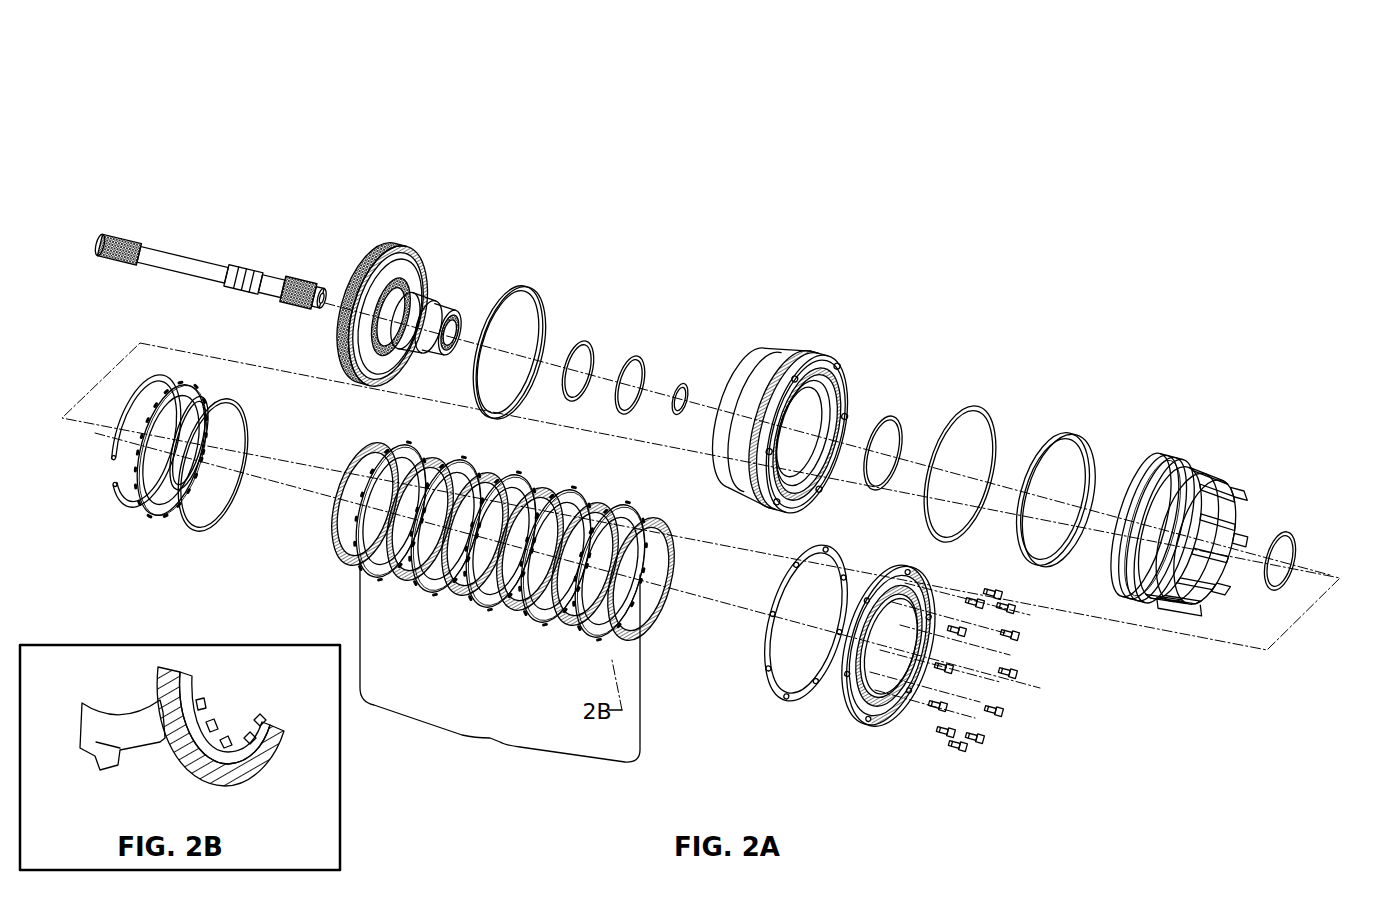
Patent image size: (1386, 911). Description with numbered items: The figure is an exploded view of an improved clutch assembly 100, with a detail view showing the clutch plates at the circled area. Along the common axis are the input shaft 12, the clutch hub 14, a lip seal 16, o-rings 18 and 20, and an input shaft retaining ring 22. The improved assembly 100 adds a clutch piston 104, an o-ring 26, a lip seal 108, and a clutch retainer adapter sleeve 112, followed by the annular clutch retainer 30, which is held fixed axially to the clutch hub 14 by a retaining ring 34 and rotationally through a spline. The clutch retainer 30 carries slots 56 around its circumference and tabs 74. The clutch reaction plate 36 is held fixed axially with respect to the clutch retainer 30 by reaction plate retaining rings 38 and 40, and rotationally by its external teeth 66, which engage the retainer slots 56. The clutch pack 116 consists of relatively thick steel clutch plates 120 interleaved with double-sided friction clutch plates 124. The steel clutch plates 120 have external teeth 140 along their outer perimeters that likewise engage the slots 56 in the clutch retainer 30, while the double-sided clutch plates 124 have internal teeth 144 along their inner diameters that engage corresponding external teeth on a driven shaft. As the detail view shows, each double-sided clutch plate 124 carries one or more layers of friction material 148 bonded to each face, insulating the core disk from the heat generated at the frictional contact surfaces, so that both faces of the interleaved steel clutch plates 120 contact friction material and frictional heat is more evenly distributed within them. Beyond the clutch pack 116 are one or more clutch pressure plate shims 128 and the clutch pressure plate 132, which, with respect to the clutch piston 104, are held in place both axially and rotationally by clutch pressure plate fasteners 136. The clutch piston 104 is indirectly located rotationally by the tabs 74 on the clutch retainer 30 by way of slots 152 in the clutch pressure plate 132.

In FIG. 2A, the input shaft 12 is at (190, 246).
In FIG. 2A, the clutch hub 14 is at (413, 242).
In FIG. 2A, the lip seal 16 is at (535, 285).
In FIG. 2A, the o-ring 18 is at (593, 335).
In FIG. 2A, the o-ring 20 is at (648, 352).
In FIG. 2A, the input shaft retaining ring 22 is at (689, 390).
In FIG. 2A, the improved clutch assembly 100 is at (822, 205).
In FIG. 2A, the clutch piston 104 is at (823, 348).
In FIG. 2A, the o-ring 26 is at (906, 410).
In FIG. 2A, the lip seal 108 is at (981, 395).
In FIG. 2A, the clutch retainer adapter sleeve 112 is at (1081, 430).
In FIG. 2A, the clutch retainer 30 is at (1217, 541).
In FIG. 2A, the slots 56 is at (1234, 495).
In FIG. 2A, the retaining ring 34 is at (1298, 520).
In FIG. 2A, the tabs 74 is at (1208, 600).
In FIG. 2A, the external teeth 66 is at (187, 396).
In FIG. 2A, the reaction plate retaining ring 38 is at (113, 506).
In FIG. 2A, the clutch reaction plate 36 is at (152, 518).
In FIG. 2A, the reaction plate retaining ring 40 is at (192, 531).
In FIG. 2A, the clutch pack 116 is at (503, 614).
In FIG. 2A, the steel clutch plates 120 is at (589, 645).
In FIG. 2A, the double-sided friction clutch plates 124 is at (616, 644).
In FIG. 2B, the double-sided friction clutch plates 124 is at (246, 738).
In FIG. 2A, the clutch pressure plate shim 128 is at (771, 705).
In FIG. 2A, the clutch pressure plate 132 is at (858, 688).
In FIG. 2A, the slots 152 is at (871, 729).
In FIG. 2A, the clutch pressure plate fasteners 136 is at (951, 750).
In FIG. 2B, the external teeth 140 is at (92, 763).
In FIG. 2B, the internal teeth 144 is at (278, 748).
In FIG. 2B, the friction material 148 is at (245, 775).